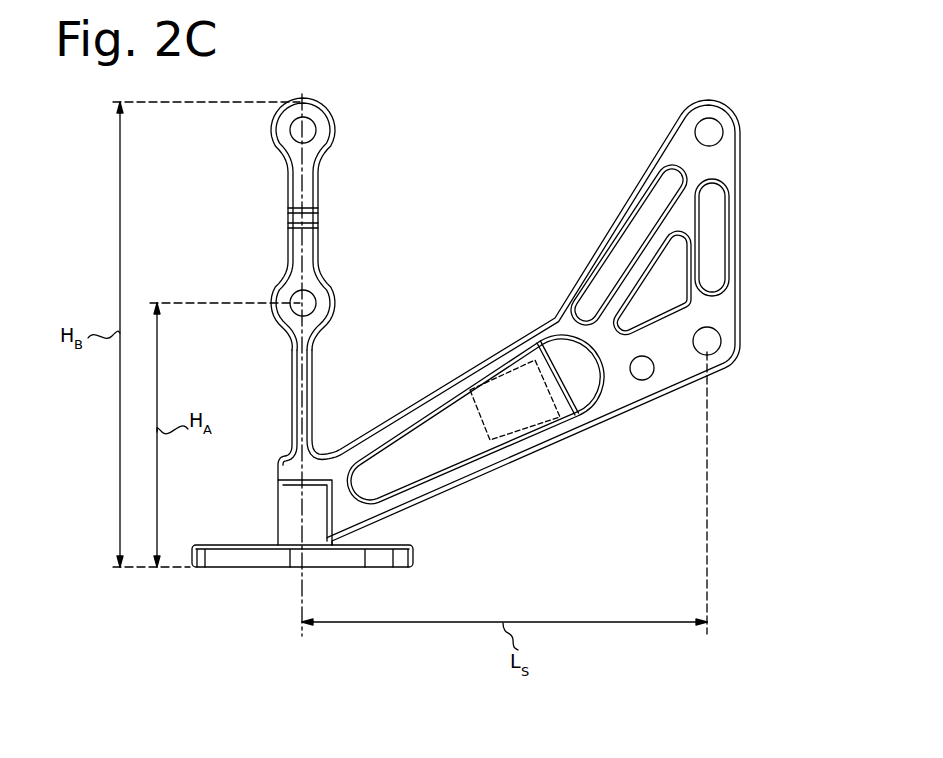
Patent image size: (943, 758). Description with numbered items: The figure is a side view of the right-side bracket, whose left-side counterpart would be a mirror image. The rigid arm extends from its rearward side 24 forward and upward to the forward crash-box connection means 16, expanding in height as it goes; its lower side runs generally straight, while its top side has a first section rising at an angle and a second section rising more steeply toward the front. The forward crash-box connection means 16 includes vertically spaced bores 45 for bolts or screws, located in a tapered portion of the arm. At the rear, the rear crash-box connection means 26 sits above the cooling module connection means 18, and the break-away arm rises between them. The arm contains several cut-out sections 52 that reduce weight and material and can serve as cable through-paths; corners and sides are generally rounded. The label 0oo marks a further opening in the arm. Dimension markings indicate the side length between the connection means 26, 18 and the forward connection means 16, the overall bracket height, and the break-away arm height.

The forward crash-box connection means 16 is at (727, 90).
The cooling module connection means 18 is at (273, 583).
The rearward side 24 is at (427, 543).
The rear crash-box connection means 26 is at (352, 98).
The bores 45 is at (710, 133).
The cut-out sections 52 is at (657, 200).
The hole 0oo is at (710, 341).